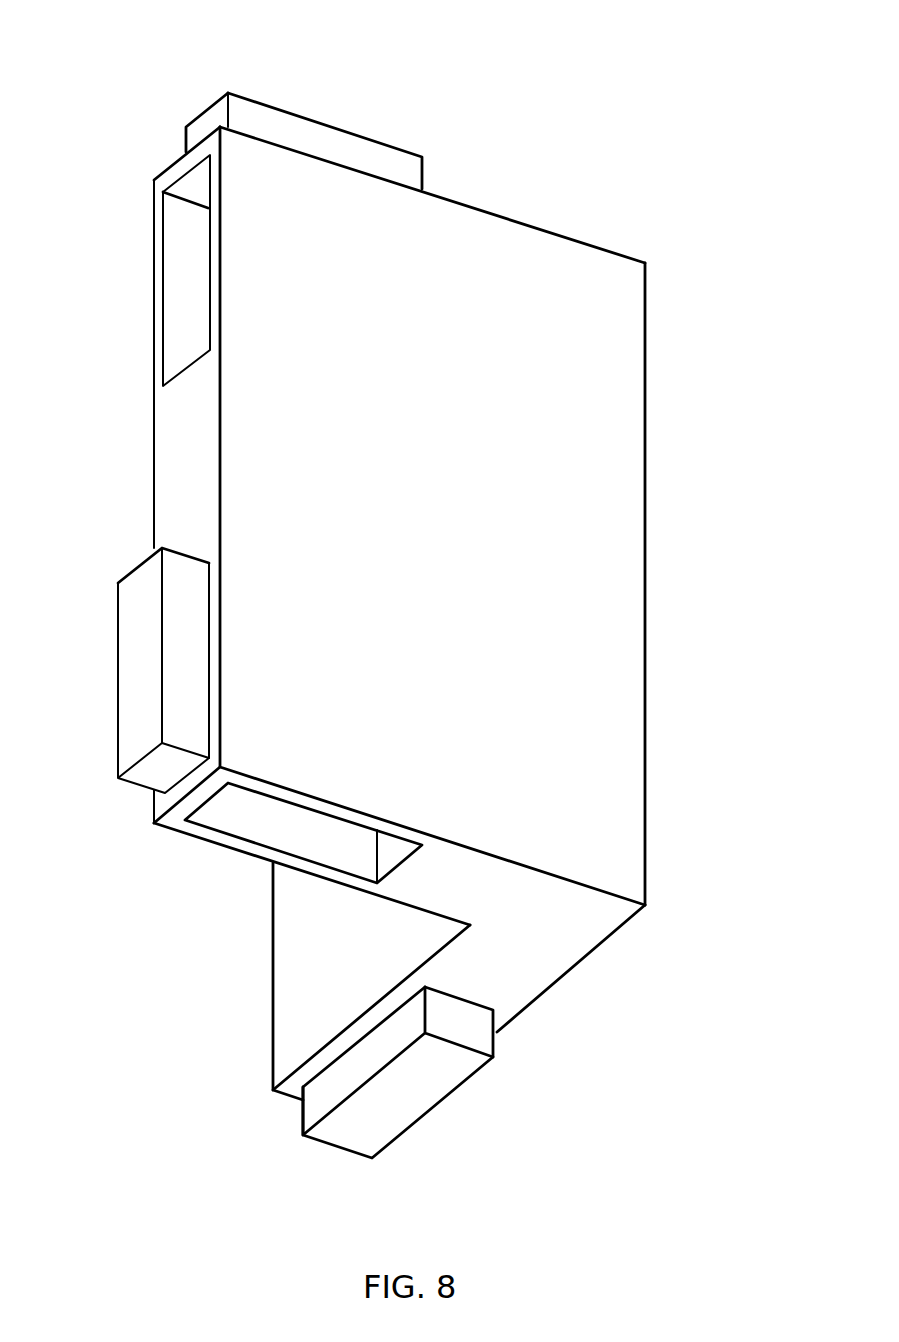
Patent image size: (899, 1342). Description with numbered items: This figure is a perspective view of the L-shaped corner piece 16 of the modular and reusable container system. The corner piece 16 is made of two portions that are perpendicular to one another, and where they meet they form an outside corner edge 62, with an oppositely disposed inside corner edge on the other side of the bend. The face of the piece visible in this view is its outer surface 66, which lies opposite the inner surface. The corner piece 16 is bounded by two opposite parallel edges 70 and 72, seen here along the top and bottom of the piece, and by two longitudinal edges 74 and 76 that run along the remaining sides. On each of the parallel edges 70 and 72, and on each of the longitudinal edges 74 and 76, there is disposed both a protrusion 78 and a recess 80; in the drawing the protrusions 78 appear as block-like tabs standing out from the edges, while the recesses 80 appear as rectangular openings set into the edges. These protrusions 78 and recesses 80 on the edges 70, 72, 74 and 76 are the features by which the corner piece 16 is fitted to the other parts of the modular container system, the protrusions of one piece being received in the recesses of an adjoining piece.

The L-shaped corner piece 16 is at (757, 190).
The outside corner edge 62 is at (647, 522).
The outer surface 66 is at (615, 597).
The parallel edge 70 is at (561, 232).
The parallel edge 72 is at (575, 928).
The longitudinal edge 74 is at (302, 1020).
The longitudinal edge 76 is at (173, 437).
The protrusion 78 is at (345, 135).
The recess 80 is at (183, 228).